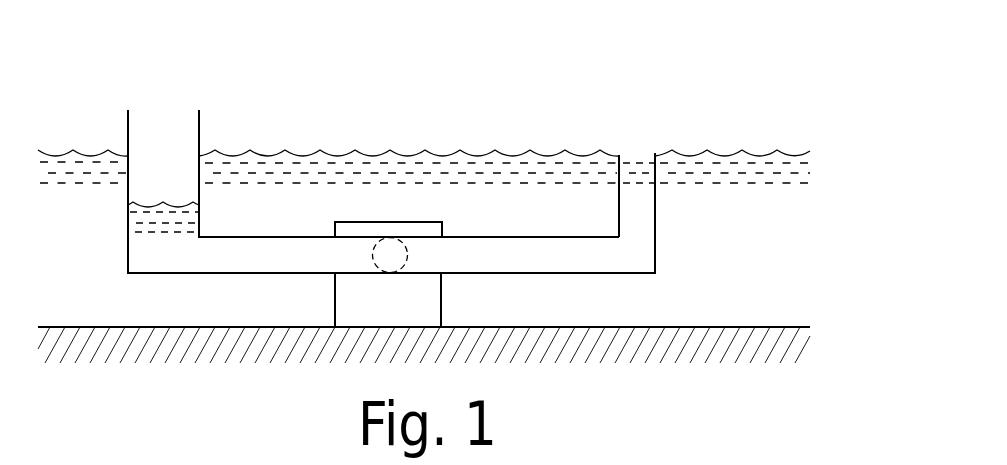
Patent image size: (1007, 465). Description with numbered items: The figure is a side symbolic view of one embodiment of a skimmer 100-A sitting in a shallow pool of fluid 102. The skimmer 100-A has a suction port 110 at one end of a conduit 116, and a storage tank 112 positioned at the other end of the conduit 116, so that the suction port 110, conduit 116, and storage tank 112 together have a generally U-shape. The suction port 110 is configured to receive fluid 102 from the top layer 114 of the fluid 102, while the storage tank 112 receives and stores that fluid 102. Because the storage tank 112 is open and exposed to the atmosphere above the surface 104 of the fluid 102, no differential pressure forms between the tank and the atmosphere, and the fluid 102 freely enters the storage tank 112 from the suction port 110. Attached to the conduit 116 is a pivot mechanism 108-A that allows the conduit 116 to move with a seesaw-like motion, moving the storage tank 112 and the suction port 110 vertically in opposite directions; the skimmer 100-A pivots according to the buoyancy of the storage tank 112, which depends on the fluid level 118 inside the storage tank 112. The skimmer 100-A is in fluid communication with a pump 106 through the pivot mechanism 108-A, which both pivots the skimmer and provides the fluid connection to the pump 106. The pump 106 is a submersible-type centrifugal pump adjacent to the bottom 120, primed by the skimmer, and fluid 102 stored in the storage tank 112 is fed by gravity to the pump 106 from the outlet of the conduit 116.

The skimmer 100-A is at (692, 87).
The fluid 102 is at (703, 315).
The surface of the fluid 104 is at (477, 155).
The pump 106 is at (441, 308).
The pivot mechanism 108-A is at (405, 246).
The suction port 110 is at (635, 155).
The storage tank 112 is at (200, 123).
The top layer of the fluid 114 is at (563, 160).
The conduit 116 is at (277, 275).
The fluid level 118 is at (182, 203).
The bottom 120 is at (768, 327).